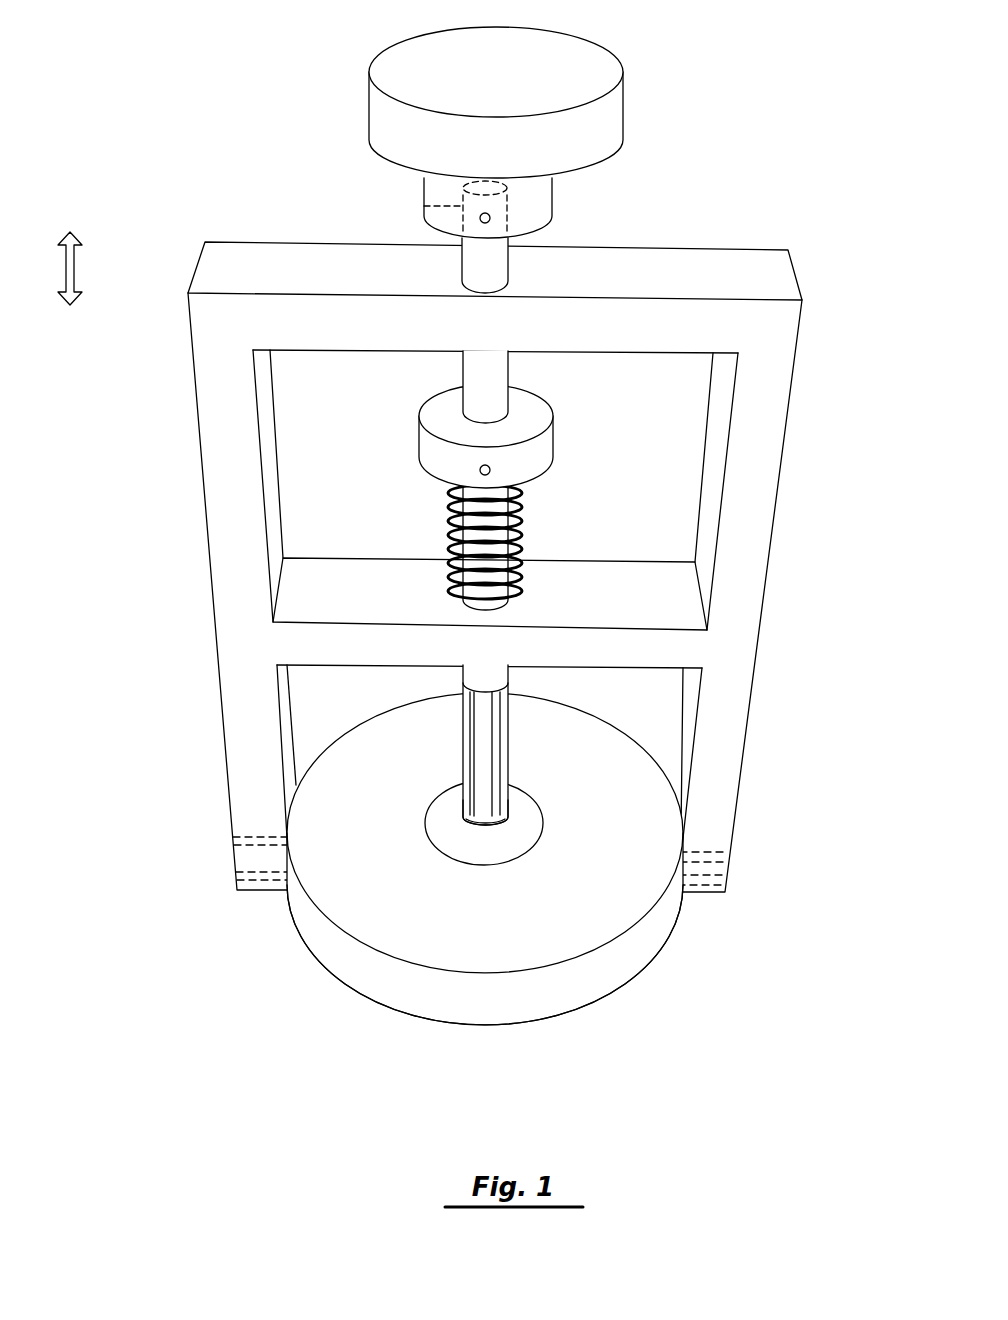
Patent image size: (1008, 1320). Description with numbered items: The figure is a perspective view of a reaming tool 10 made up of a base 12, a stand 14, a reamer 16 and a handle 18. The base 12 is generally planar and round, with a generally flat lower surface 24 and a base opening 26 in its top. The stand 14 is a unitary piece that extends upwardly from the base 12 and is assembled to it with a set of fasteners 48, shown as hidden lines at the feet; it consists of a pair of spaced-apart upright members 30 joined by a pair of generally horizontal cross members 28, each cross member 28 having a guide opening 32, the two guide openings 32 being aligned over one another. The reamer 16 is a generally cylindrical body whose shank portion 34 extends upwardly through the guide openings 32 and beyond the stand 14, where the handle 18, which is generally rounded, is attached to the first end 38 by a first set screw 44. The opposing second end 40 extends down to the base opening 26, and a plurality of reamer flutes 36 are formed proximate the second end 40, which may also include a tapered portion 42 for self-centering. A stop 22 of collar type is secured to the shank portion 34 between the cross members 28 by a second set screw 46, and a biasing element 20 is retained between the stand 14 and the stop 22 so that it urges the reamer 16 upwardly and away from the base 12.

The reaming tool 10 is at (204, 80).
The base 12 is at (315, 940).
The stand 14 is at (226, 748).
The reamer 16 is at (458, 363).
The handle 18 is at (623, 107).
The biasing element 20 is at (523, 525).
The stop 22 is at (419, 444).
The lower surface 24 is at (497, 1025).
The base opening 26 is at (543, 810).
The cross members 28 is at (684, 250).
The upright members 30 is at (205, 458).
The guide opening 32 is at (462, 286).
The shank portion 34 is at (508, 372).
The reamer flutes 36 is at (463, 728).
The first end 38 is at (424, 206).
The second end 40 is at (465, 812).
The tapered portion 42 is at (483, 828).
The first set screw 44 is at (490, 218).
The second set screw 46 is at (490, 470).
The fasteners 48 is at (237, 842).